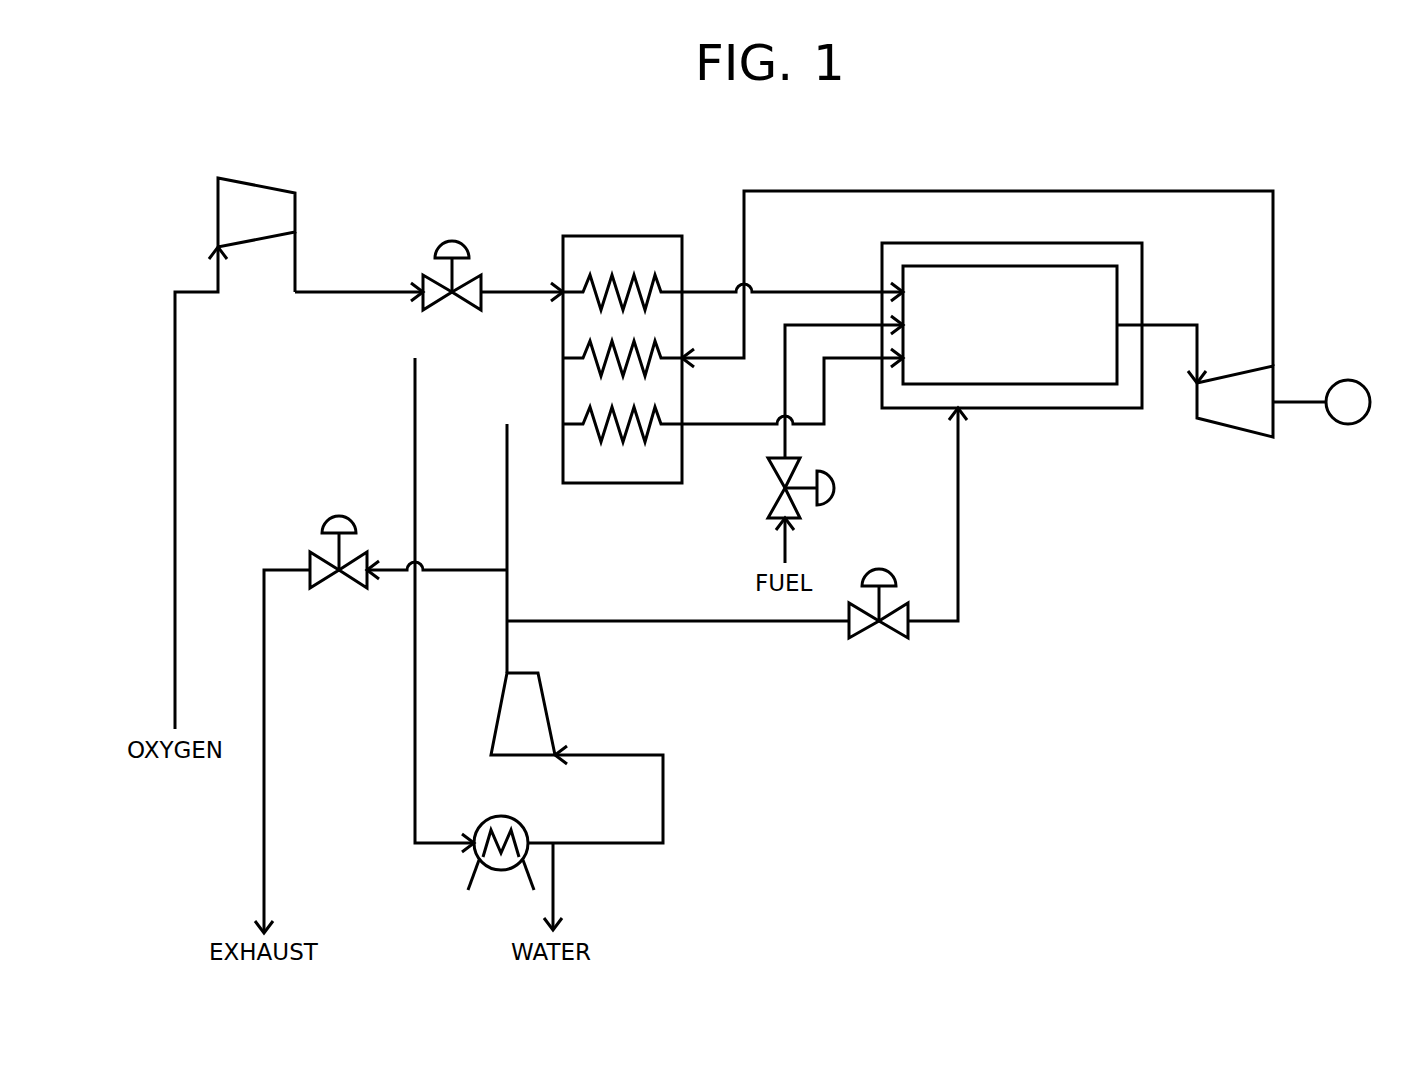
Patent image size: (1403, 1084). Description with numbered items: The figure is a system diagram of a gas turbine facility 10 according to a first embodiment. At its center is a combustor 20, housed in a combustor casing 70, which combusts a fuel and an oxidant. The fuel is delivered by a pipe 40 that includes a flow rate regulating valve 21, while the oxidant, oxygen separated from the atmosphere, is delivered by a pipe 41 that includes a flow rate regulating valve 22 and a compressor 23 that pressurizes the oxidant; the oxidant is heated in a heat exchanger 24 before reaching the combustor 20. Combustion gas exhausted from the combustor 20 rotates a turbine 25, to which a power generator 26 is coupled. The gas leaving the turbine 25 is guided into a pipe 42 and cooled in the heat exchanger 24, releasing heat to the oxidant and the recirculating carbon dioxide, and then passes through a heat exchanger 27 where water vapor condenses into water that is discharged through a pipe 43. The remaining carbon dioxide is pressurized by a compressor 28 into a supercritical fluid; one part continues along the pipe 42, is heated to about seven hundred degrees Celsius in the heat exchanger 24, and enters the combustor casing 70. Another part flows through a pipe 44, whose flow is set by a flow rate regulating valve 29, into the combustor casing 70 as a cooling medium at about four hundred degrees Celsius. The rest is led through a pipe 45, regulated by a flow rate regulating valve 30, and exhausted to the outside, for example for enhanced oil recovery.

The gas turbine facility 10 is at (648, 150).
The combustor 20 is at (978, 266).
The flow rate regulating valve 21 is at (777, 494).
The flow rate regulating valve 22 is at (431, 276).
The compressor 23 is at (258, 184).
The heat exchanger 24 is at (626, 236).
The turbine 25 is at (1232, 430).
The power generator 26 is at (1350, 426).
The heat exchanger 27 is at (499, 816).
The compressor 28 is at (550, 712).
The flow rate regulating valve 29 is at (896, 632).
The flow rate regulating valve 30 is at (318, 552).
The pipe 40 is at (784, 389).
The pipe 41 is at (361, 296).
The pipe 42 is at (506, 492).
The pipe 43 is at (556, 898).
The pipe 44 is at (692, 625).
The pipe 45 is at (463, 570).
The combustor casing 70 is at (1055, 243).